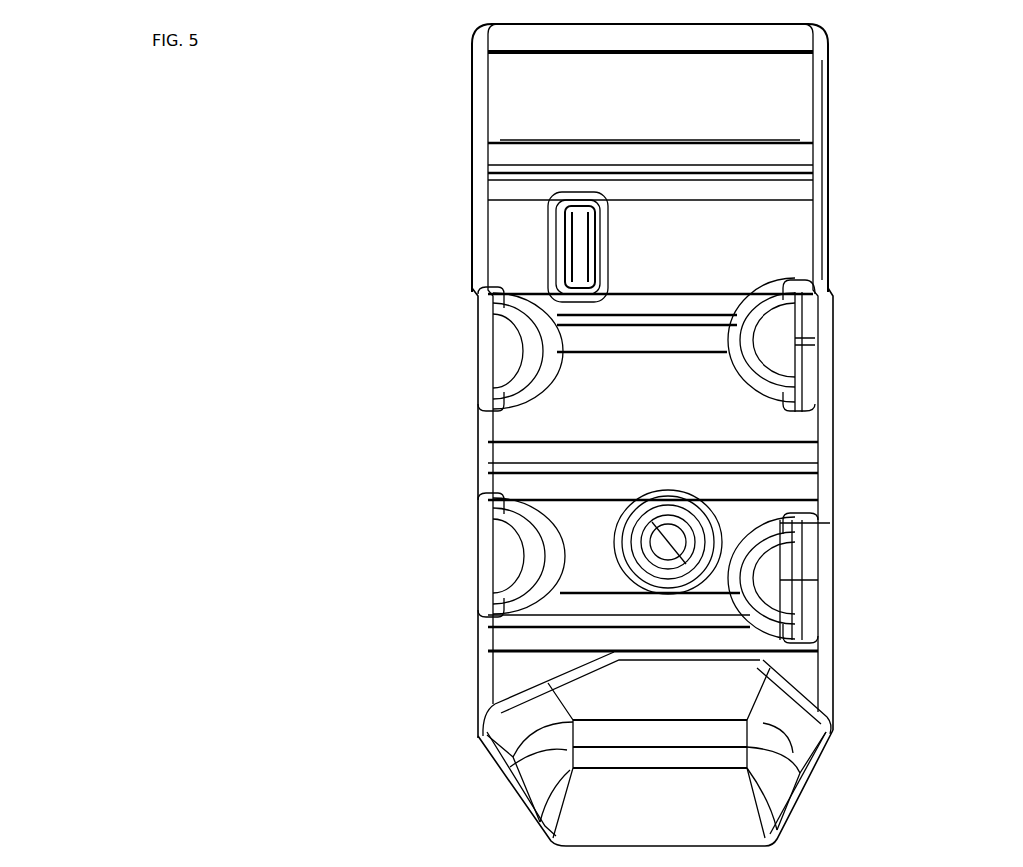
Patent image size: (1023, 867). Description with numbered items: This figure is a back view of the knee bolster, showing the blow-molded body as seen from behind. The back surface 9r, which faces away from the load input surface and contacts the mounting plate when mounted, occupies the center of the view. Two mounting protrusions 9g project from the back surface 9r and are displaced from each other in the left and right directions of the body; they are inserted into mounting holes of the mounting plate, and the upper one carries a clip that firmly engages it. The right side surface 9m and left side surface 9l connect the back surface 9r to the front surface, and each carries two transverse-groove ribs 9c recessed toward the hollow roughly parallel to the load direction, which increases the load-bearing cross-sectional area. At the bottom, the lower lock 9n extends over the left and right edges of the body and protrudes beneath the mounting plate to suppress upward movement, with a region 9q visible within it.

The right side surface 9m is at (470, 96).
The left side surface 9l is at (829, 102).
The back surface 9r is at (650, 114).
The mounting protrusion 9g is at (565, 235).
The transverse-groove rib 9c is at (510, 352).
The lower lock 9n is at (470, 770).
The funnel inner surface 9q is at (685, 670).